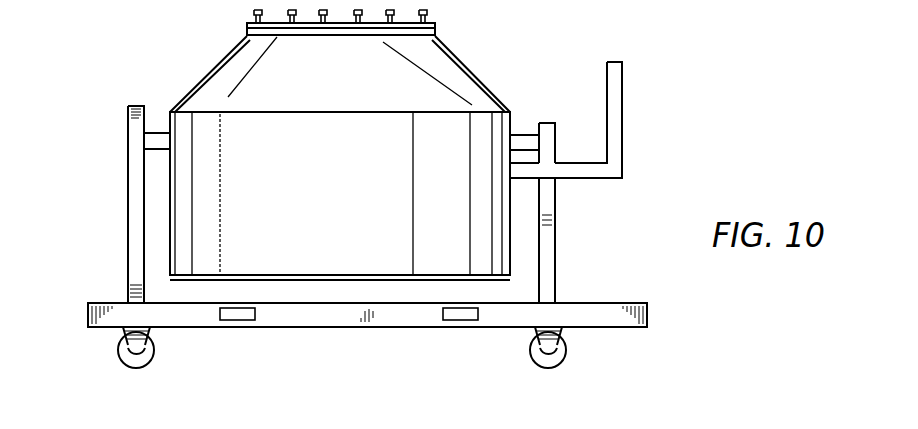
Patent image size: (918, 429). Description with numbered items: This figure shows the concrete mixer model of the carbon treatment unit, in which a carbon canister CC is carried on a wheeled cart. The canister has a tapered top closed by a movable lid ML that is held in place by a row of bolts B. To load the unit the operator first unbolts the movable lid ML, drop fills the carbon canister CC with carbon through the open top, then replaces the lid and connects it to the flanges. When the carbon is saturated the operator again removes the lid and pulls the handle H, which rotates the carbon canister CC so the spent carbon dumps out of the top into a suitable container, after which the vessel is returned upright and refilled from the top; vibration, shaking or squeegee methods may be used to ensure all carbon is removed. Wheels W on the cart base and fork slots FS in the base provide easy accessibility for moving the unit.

The bolt B is at (253, 10).
The movable lid ML is at (436, 30).
The carbon canister CC is at (203, 123).
The handle H is at (623, 113).
The wheel W is at (566, 350).
The fork slot FS is at (458, 322).